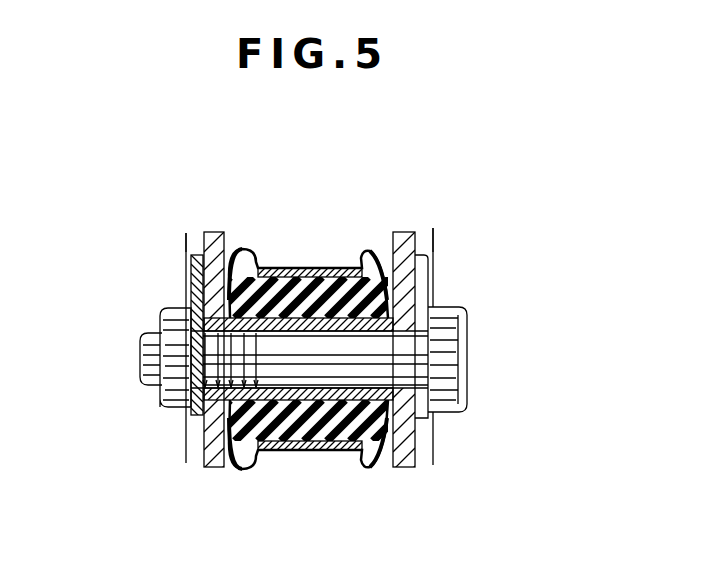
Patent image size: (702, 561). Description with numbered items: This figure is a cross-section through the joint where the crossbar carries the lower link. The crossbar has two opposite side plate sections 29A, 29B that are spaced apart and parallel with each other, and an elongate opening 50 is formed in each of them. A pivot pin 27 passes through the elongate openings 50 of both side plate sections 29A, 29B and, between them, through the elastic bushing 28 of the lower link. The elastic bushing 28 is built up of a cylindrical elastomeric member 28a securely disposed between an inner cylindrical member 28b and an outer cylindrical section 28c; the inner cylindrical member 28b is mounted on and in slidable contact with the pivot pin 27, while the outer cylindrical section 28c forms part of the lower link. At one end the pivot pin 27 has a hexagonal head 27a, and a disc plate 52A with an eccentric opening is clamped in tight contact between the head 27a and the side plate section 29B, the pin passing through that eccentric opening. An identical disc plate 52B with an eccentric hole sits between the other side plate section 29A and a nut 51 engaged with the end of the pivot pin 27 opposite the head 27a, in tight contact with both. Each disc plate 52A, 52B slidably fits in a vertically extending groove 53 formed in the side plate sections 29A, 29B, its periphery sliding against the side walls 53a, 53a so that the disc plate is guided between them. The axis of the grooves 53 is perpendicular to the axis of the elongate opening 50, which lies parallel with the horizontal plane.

The pivot pin 27 is at (345, 397).
The hexagonal head 27a is at (463, 313).
The elastic bushing 28 is at (301, 382).
The cylindrical elastomeric member 28a is at (316, 305).
The inner cylindrical member 28b is at (300, 392).
The outer cylindrical section 28c is at (328, 447).
The side plate section 29A is at (213, 240).
The side plate section 29B is at (408, 233).
The elongate opening 50 is at (405, 383).
The nut 51 is at (172, 413).
The disc plate 52A is at (437, 270).
The disc plate 52B is at (190, 273).
The groove 53 is at (200, 238).
The side walls 53a is at (183, 245).